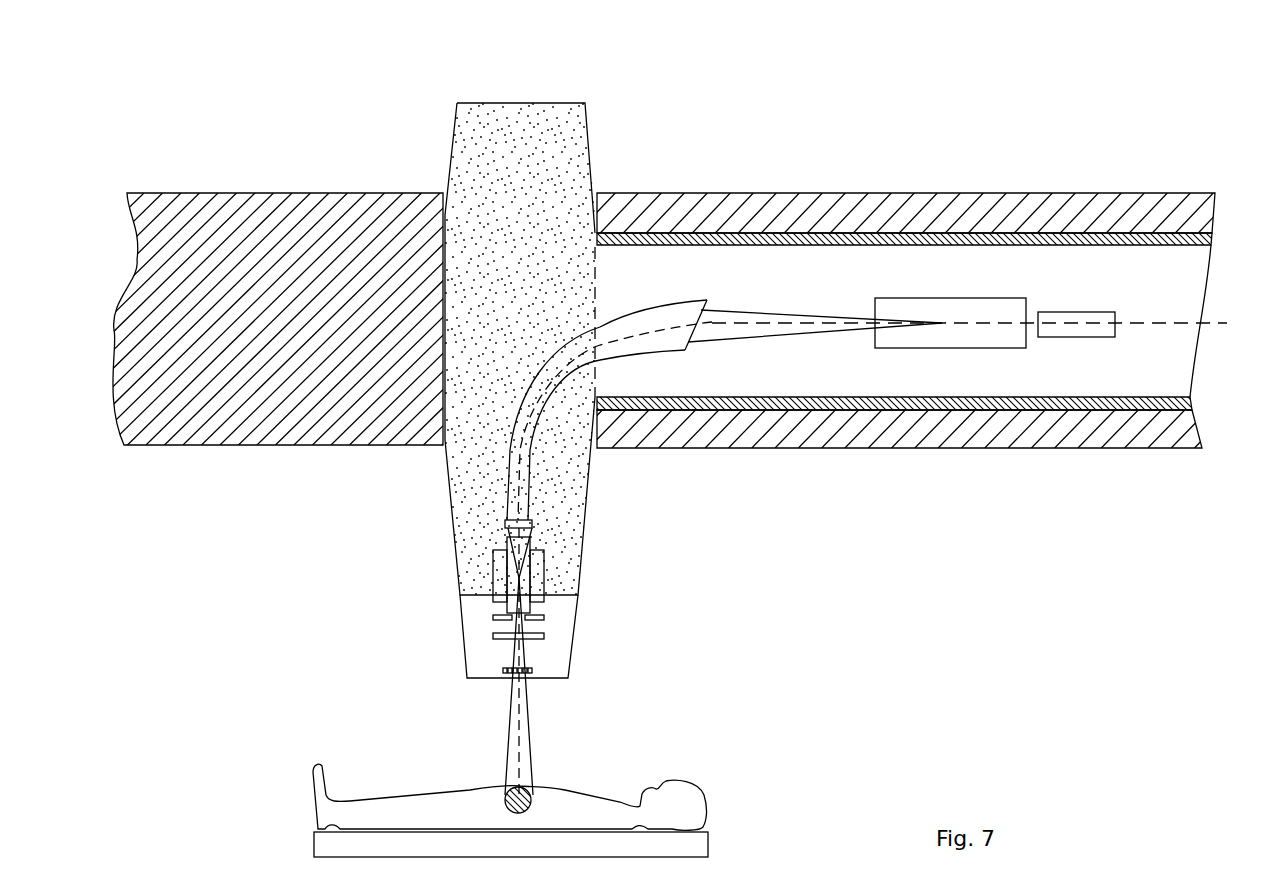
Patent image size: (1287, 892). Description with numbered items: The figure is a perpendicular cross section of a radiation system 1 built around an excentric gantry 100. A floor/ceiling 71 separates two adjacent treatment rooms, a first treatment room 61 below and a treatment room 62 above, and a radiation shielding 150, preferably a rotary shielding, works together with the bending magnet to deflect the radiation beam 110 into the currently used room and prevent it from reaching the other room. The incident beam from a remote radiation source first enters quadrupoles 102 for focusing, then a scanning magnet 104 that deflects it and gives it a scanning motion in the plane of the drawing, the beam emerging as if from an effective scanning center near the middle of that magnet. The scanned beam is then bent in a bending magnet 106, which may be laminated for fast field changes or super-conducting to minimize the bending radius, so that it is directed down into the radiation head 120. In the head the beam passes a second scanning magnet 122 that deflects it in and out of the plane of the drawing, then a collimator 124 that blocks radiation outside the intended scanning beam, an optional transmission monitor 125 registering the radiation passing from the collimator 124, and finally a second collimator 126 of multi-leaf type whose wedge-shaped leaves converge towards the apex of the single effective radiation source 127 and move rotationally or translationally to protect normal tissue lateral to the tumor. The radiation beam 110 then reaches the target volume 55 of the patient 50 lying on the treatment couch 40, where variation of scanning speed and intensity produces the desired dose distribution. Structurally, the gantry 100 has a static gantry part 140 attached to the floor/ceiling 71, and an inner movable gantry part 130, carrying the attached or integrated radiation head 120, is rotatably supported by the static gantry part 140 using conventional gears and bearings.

The radiation system 1 is at (639, 105).
The treatment couch 40 is at (313, 843).
The patient 50 is at (313, 798).
The target volume 55 is at (538, 788).
The first treatment room 61 is at (933, 655).
The treatment room 62 is at (366, 165).
The floor/ceiling 71 is at (271, 447).
The excentric gantry 100 is at (518, 308).
The quadrupoles 102 is at (1080, 312).
The scanning magnet 104 is at (950, 296).
The bending magnet 106 is at (650, 303).
The radiation beam 110 is at (510, 757).
The radiation head 120 is at (458, 602).
The second scanning magnet 122 is at (492, 561).
The collimator 124 is at (546, 616).
The transmission monitor 125 is at (492, 635).
The second collimator 126 is at (530, 675).
The effective radiation source 127 is at (545, 575).
The inner movable gantry part 130 is at (1178, 352).
The static gantry part 140 is at (1193, 404).
The radiation shielding 150 is at (572, 152).